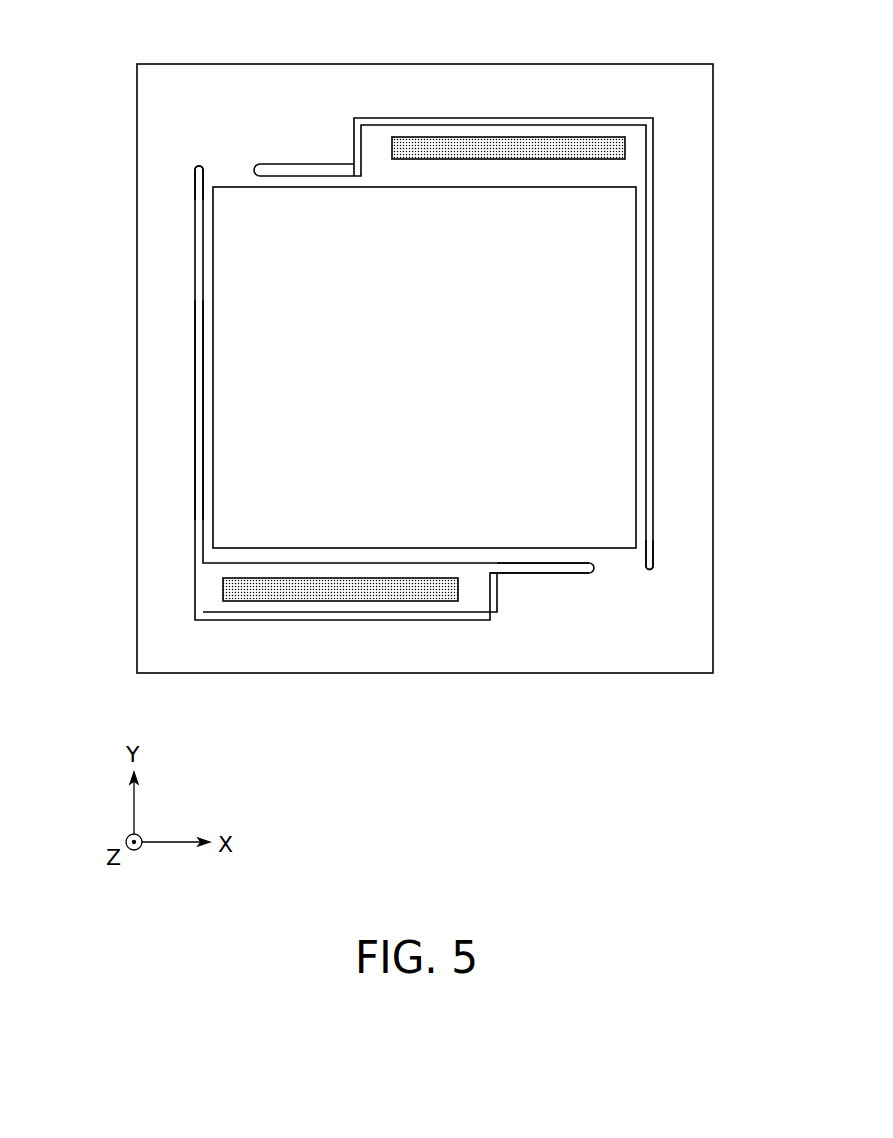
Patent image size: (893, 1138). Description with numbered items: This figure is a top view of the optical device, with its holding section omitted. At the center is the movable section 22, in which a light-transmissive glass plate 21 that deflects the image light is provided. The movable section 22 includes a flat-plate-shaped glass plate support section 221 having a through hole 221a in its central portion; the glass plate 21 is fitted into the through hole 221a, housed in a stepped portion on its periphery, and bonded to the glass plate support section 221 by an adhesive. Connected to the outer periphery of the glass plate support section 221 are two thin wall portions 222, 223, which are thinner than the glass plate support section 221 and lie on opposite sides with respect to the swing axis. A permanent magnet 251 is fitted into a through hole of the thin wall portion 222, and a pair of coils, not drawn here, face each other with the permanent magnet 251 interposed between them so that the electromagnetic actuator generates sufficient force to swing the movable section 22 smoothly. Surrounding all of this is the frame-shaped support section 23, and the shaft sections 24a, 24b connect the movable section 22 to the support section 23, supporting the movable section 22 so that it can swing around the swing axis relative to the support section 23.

The glass plate 21 is at (253, 282).
The movable section 22 is at (531, 573).
The support section 23 is at (688, 372).
The shaft section 24a is at (232, 167).
The shaft section 24b is at (618, 567).
The glass plate support section 221 is at (205, 383).
The through hole 221a is at (213, 452).
The thin wall portion 222 is at (413, 128).
The thin wall portion 223 is at (373, 605).
The permanent magnet 251 is at (540, 147).